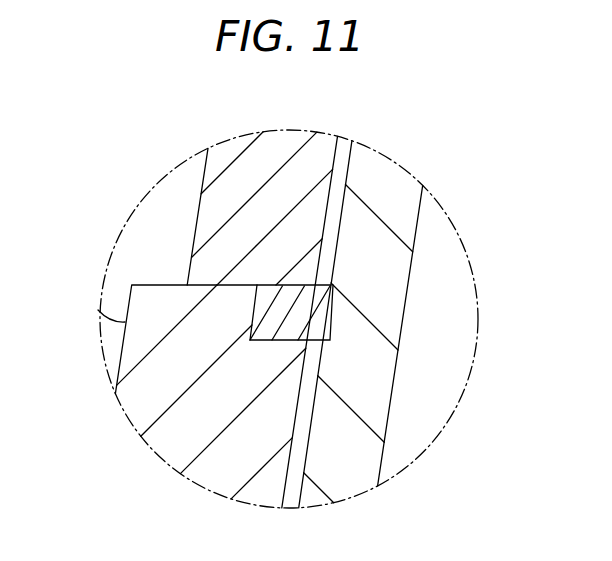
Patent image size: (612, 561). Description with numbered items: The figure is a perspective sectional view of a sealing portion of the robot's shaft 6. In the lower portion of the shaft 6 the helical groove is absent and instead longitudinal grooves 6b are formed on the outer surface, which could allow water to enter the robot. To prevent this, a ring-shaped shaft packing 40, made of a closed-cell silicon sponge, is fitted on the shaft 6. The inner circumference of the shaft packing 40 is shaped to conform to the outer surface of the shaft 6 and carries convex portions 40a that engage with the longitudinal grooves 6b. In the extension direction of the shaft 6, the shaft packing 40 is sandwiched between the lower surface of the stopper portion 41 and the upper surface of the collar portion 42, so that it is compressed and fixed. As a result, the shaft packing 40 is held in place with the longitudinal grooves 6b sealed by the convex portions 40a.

The shaft 6 is at (440, 243).
The longitudinal groove 6b is at (344, 144).
The shaft packing 40 is at (278, 302).
The convex portion 40a is at (323, 300).
The stopper portion 41 is at (258, 150).
The collar portion 42 is at (157, 422).